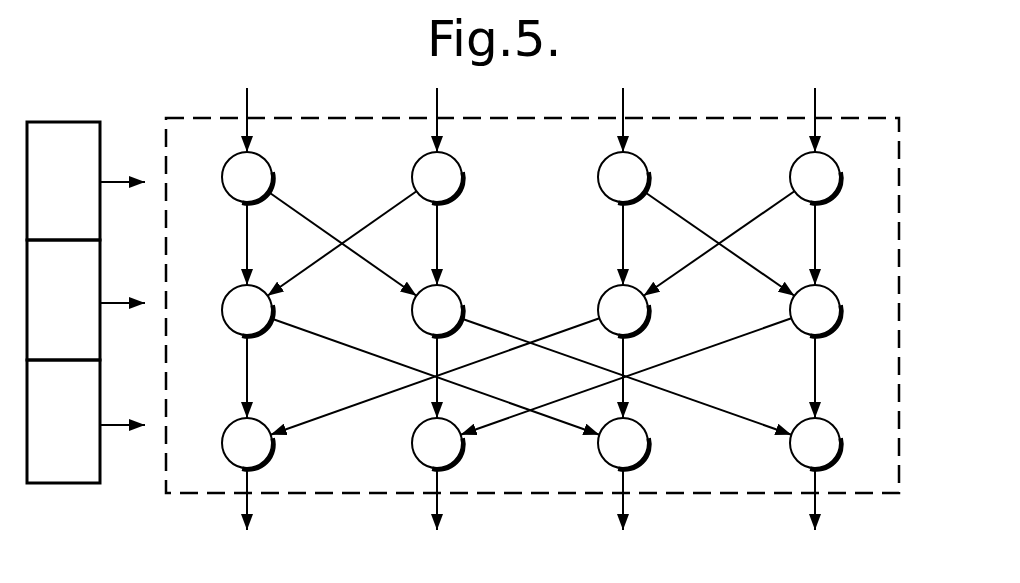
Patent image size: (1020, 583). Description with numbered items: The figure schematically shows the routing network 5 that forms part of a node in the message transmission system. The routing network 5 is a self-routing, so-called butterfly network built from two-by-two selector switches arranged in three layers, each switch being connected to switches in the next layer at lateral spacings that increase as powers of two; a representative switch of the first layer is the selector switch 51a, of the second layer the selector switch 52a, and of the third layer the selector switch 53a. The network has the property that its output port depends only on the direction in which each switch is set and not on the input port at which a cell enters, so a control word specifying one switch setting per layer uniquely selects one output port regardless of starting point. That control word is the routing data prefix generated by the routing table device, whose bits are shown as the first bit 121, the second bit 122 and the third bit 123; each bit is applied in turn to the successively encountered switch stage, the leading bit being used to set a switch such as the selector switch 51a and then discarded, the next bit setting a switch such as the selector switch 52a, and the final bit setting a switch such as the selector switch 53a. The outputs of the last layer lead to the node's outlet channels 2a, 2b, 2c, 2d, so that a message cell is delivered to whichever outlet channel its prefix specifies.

The routing network 5 is at (866, 118).
The first bit of routing data prefix 121 is at (86, 181).
The second bit of routing data prefix 122 is at (86, 300).
The third bit of routing data prefix 123 is at (86, 421).
The selector switch of first layer 51a is at (265, 156).
The selector switch of second layer 52a is at (230, 296).
The selector switch of third layer 53a is at (272, 450).
The outlet channel 2a is at (250, 500).
The outlet channel 2b is at (440, 500).
The outlet channel 2c is at (626, 500).
The outlet channel 2d is at (818, 500).